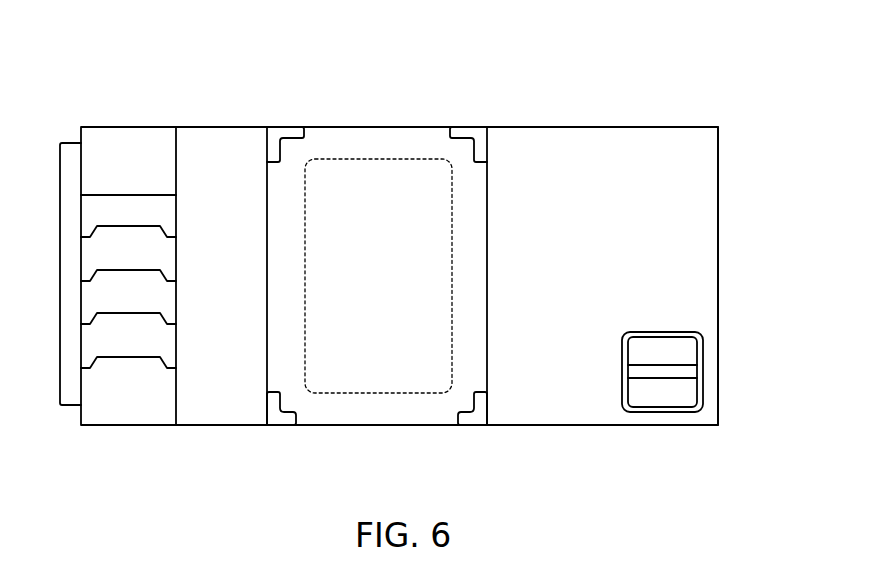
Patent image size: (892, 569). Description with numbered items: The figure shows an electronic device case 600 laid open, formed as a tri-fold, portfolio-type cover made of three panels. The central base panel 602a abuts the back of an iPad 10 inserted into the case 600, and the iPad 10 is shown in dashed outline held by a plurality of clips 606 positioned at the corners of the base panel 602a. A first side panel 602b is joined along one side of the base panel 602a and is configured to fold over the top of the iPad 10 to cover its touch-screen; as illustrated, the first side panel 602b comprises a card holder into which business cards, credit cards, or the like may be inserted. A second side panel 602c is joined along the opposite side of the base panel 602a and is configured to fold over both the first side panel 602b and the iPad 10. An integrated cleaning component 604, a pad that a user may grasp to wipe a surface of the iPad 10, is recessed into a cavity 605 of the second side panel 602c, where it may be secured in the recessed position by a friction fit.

The electronic device case 600 is at (548, 71).
The base panel 602a is at (405, 426).
The first side panel 602b is at (162, 126).
The second side panel 602c is at (652, 126).
The iPad 10 is at (385, 138).
The integrated cleaning component 604 is at (658, 331).
The cavity 605 is at (703, 368).
The clips 606 is at (266, 145).